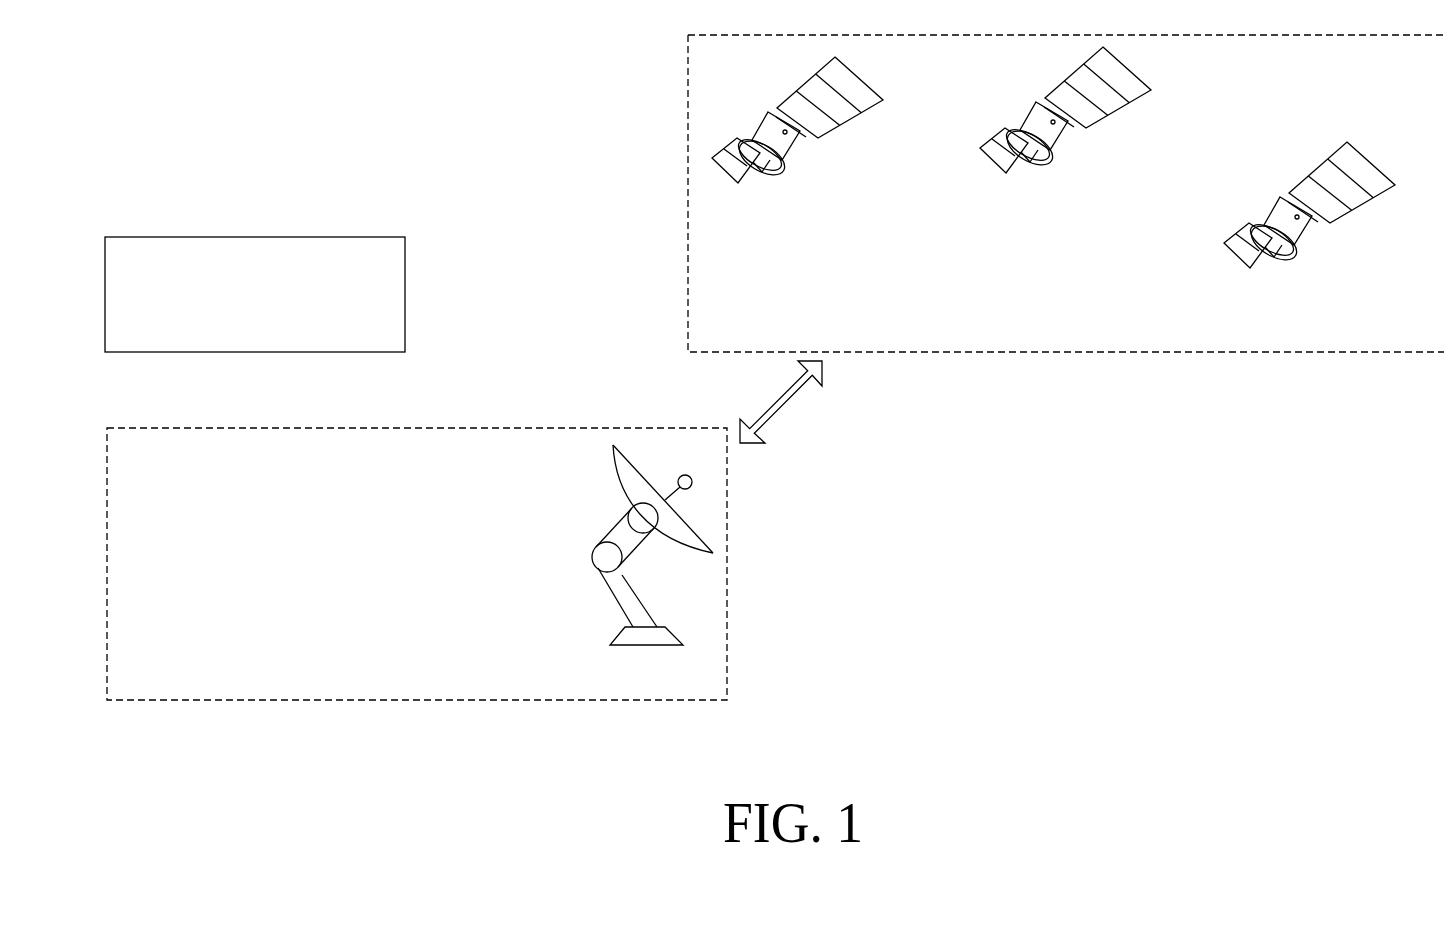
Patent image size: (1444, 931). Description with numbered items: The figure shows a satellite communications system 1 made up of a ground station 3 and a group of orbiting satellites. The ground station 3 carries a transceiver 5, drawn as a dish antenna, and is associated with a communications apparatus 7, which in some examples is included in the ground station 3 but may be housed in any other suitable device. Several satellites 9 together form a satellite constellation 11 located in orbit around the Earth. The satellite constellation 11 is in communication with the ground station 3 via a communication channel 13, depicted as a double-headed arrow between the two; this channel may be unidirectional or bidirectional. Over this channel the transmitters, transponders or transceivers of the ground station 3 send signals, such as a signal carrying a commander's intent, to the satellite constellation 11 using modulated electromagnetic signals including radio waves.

The system 1 is at (178, 126).
The ground station 3 is at (417, 564).
The transceiver 5 is at (615, 530).
The communications apparatus 7 is at (255, 294).
The satellites 9 is at (800, 155).
The satellite constellation 11 is at (1066, 193).
The communication channel 13 is at (787, 408).